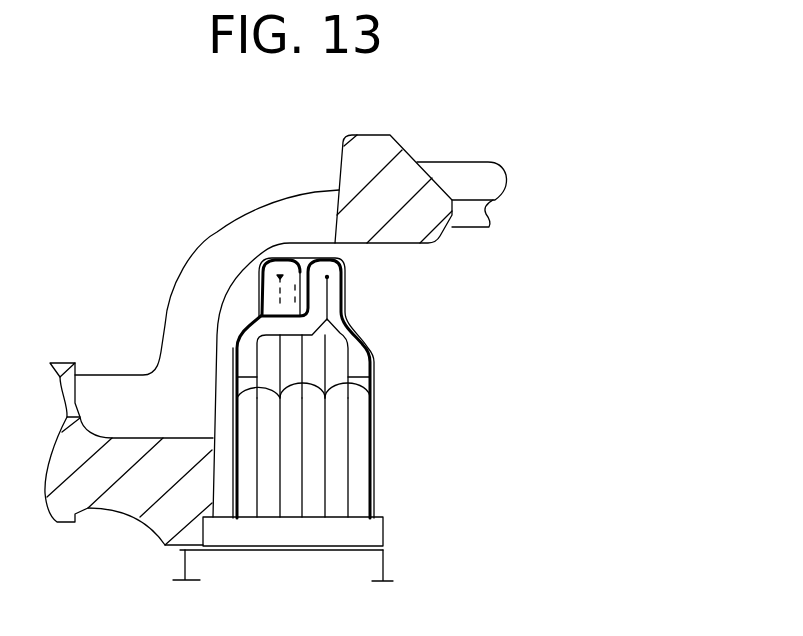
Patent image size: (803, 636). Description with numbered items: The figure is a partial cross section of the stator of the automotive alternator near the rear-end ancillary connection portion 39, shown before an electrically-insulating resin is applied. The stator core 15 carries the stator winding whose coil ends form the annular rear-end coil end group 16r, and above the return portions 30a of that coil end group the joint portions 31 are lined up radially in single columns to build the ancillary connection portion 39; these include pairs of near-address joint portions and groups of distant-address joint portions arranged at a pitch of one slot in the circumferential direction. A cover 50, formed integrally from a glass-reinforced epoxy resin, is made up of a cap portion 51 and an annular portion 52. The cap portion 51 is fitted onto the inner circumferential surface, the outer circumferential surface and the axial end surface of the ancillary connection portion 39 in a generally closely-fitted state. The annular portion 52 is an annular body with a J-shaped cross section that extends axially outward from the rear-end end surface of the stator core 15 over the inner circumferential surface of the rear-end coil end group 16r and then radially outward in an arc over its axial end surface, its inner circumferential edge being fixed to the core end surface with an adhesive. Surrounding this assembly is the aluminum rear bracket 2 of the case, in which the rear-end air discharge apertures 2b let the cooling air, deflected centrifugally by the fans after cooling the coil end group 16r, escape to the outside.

The rear bracket 2 is at (60, 364).
The rear-end air discharge apertures 2b is at (152, 377).
The stator core 15 is at (185, 562).
The rear-end coil end group 16r is at (380, 490).
The return portions 30a is at (358, 442).
The joint portions 31 is at (390, 283).
The rear-end ancillary connection portion 39 is at (350, 310).
The cover 50 is at (458, 387).
The cap portion 51 is at (370, 355).
The annular portion 52 is at (374, 433).